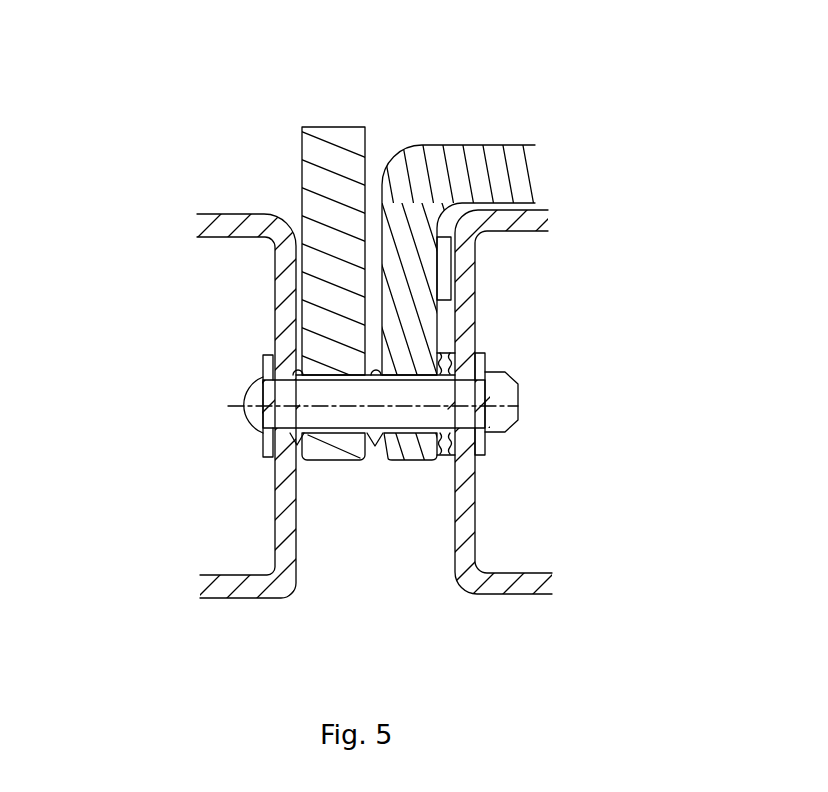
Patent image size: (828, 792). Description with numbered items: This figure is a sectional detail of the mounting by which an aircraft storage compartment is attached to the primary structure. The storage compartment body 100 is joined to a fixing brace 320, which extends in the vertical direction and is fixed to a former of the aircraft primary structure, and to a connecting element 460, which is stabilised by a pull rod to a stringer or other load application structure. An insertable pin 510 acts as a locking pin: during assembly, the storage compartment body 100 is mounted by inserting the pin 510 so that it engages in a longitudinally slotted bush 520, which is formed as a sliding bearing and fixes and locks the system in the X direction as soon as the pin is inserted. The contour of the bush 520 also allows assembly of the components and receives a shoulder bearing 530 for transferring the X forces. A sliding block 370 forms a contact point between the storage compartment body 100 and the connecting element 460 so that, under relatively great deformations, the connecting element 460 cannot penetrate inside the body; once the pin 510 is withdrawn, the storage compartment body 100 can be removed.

The storage compartment body 100 is at (200, 583).
The fixing brace 320 is at (340, 130).
The connecting element 460 is at (542, 154).
The sliding block 370 is at (458, 272).
The insertable pin 510 is at (255, 418).
The longitudinally slotted bush 520 is at (375, 445).
The shoulder bearing 530 is at (442, 457).